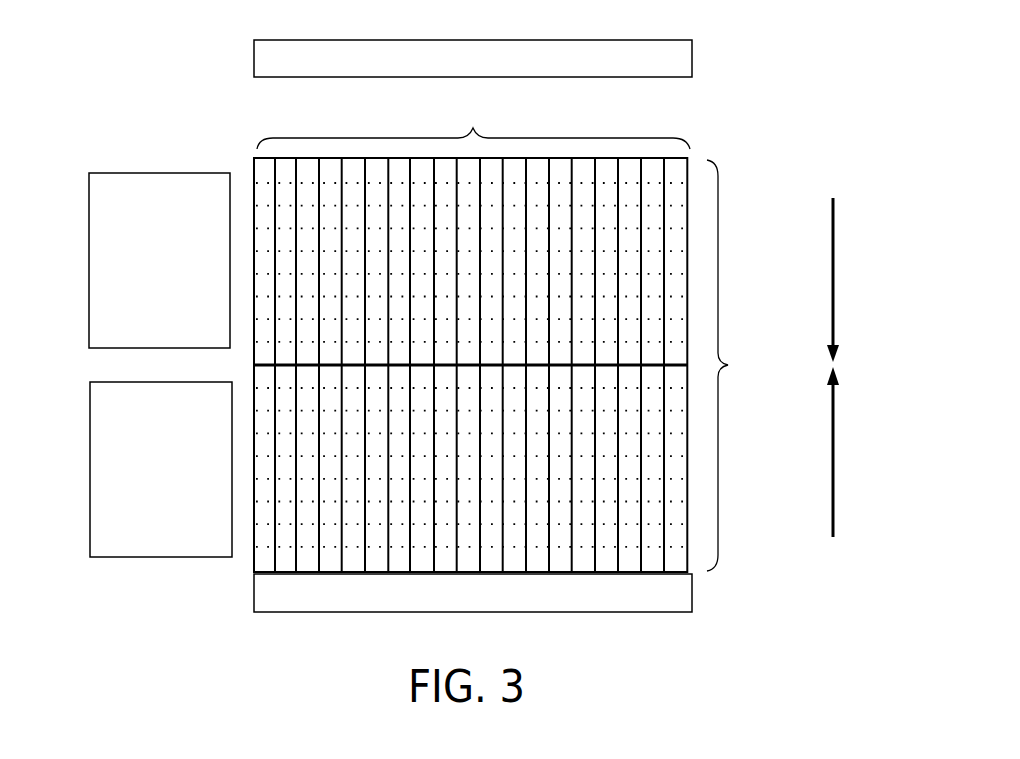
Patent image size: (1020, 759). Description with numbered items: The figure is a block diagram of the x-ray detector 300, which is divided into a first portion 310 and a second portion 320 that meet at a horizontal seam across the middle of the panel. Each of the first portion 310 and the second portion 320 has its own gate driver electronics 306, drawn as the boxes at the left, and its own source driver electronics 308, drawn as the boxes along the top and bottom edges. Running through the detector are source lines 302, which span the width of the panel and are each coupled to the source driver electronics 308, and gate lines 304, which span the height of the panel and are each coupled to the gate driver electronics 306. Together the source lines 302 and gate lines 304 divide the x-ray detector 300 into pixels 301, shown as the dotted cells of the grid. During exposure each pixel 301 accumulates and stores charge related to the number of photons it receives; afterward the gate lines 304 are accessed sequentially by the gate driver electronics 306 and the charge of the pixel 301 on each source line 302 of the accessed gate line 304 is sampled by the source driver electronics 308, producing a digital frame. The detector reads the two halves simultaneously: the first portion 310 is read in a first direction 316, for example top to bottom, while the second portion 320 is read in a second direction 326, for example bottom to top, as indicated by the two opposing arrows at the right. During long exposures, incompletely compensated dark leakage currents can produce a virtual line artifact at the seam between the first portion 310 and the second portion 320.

The x-ray detector 300 is at (166, 116).
The pixel 301 is at (690, 158).
The source line 302 is at (473, 121).
The gate line 304 is at (740, 365).
The gate driver electronics 306 is at (118, 365).
The source driver electronics 308 is at (588, 68).
The first portion 310 is at (72, 256).
The first direction 316 is at (835, 257).
The second portion 320 is at (78, 483).
The second direction 326 is at (835, 458).